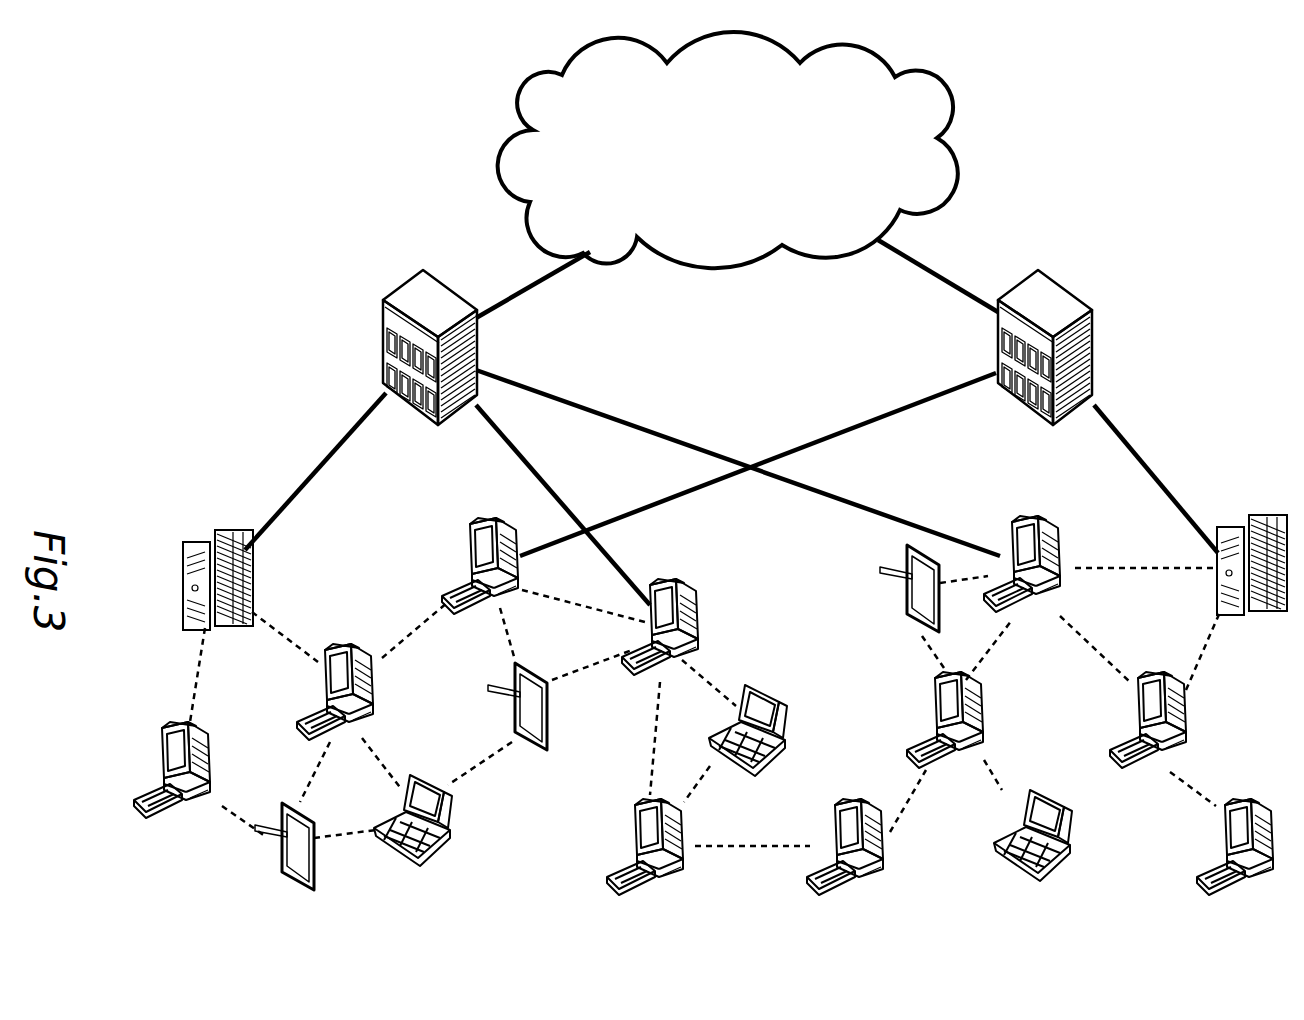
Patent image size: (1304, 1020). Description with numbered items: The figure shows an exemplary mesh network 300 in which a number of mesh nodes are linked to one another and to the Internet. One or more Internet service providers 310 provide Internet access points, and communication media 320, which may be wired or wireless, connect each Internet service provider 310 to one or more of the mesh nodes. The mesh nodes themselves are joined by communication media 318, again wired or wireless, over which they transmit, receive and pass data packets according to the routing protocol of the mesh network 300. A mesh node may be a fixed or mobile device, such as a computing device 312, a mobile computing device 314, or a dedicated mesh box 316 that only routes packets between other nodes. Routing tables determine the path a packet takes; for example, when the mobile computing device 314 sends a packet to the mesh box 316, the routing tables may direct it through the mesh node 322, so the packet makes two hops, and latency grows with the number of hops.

The mesh network 300 is at (1140, 208).
The Internet service provider 310 is at (985, 415).
The computing device 312 is at (977, 857).
The mobile computing device 314 is at (272, 896).
The mesh box 316 is at (185, 518).
The communication media 318 is at (388, 645).
The communication media 320 is at (845, 428).
The mesh node 322 is at (212, 738).